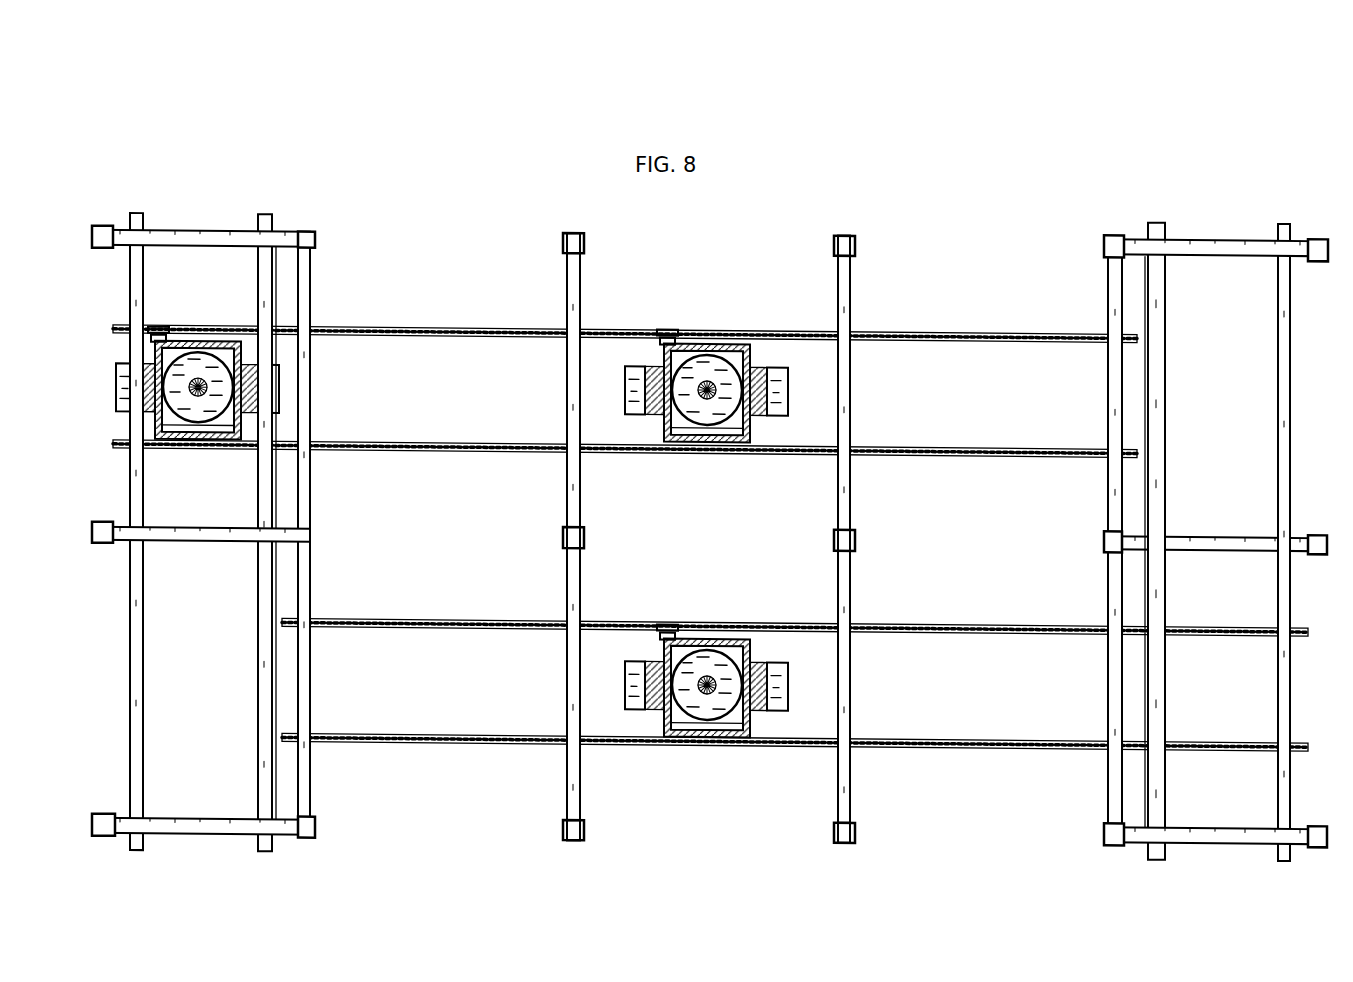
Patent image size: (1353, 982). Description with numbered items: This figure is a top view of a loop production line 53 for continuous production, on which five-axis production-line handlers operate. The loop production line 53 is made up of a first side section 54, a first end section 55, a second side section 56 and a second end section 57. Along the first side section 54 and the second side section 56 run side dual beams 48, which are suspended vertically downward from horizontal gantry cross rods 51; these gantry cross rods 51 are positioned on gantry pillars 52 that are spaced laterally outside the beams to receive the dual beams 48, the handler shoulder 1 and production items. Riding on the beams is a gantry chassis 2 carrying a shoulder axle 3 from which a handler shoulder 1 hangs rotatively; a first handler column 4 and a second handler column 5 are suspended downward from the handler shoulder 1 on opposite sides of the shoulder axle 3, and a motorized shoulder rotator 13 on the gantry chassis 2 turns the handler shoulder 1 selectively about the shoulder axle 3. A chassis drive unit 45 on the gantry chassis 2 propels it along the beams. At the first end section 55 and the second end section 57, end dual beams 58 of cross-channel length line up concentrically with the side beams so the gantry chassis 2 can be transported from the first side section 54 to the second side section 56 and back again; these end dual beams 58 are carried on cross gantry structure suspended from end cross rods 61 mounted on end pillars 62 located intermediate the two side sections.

The handler shoulder 1 is at (648, 346).
The gantry chassis 2 is at (707, 359).
The shoulder axle 3 is at (711, 351).
The first handler column 4 is at (615, 390).
The second handler column 5 is at (790, 391).
The motorized shoulder rotator 13 is at (706, 438).
The chassis drive unit 45 is at (668, 311).
The dual beams 48 is at (425, 309).
The gantry cross rods 51 is at (577, 378).
The gantry pillars 52 is at (566, 240).
The loop production line 53 is at (185, 100).
The first side section 54 is at (392, 381).
The first end section 55 is at (1224, 325).
The second side section 56 is at (1018, 677).
The second end section 57 is at (195, 755).
The end dual beams 58 is at (197, 459).
The end cross rods 61 is at (192, 542).
The end pillars 62 is at (103, 543).